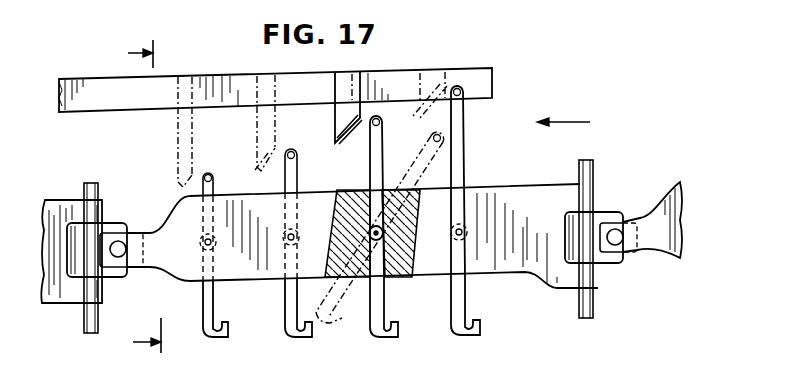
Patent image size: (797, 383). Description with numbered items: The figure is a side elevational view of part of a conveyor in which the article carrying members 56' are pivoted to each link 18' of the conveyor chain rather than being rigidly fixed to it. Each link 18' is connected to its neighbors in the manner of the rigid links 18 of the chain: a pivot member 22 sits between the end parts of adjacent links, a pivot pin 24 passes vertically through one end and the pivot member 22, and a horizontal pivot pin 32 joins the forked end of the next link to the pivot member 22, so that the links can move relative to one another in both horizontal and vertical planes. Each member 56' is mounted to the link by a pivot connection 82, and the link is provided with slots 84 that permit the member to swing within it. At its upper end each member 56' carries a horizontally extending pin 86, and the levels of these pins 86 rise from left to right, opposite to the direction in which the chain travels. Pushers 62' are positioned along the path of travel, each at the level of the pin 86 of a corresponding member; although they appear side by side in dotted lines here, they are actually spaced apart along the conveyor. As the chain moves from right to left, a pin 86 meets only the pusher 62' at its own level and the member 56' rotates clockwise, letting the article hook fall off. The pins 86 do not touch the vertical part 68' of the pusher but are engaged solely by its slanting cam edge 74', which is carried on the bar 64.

The rigid link 18 is at (141, 204).
The link 18' is at (355, 232).
The pivot member 22 is at (105, 224).
The pivot pin 24 is at (85, 316).
The horizontal pivot pin 32 is at (121, 257).
The article carrying member 56' is at (341, 316).
The pusher 62' is at (294, 129).
The bar 64 is at (477, 72).
The vertical part 68' is at (365, 94).
The slanting cam edge 74' is at (339, 144).
The pivot connection 82 is at (284, 240).
The slot 84 is at (364, 273).
The horizontally extending pin 86 is at (211, 181).